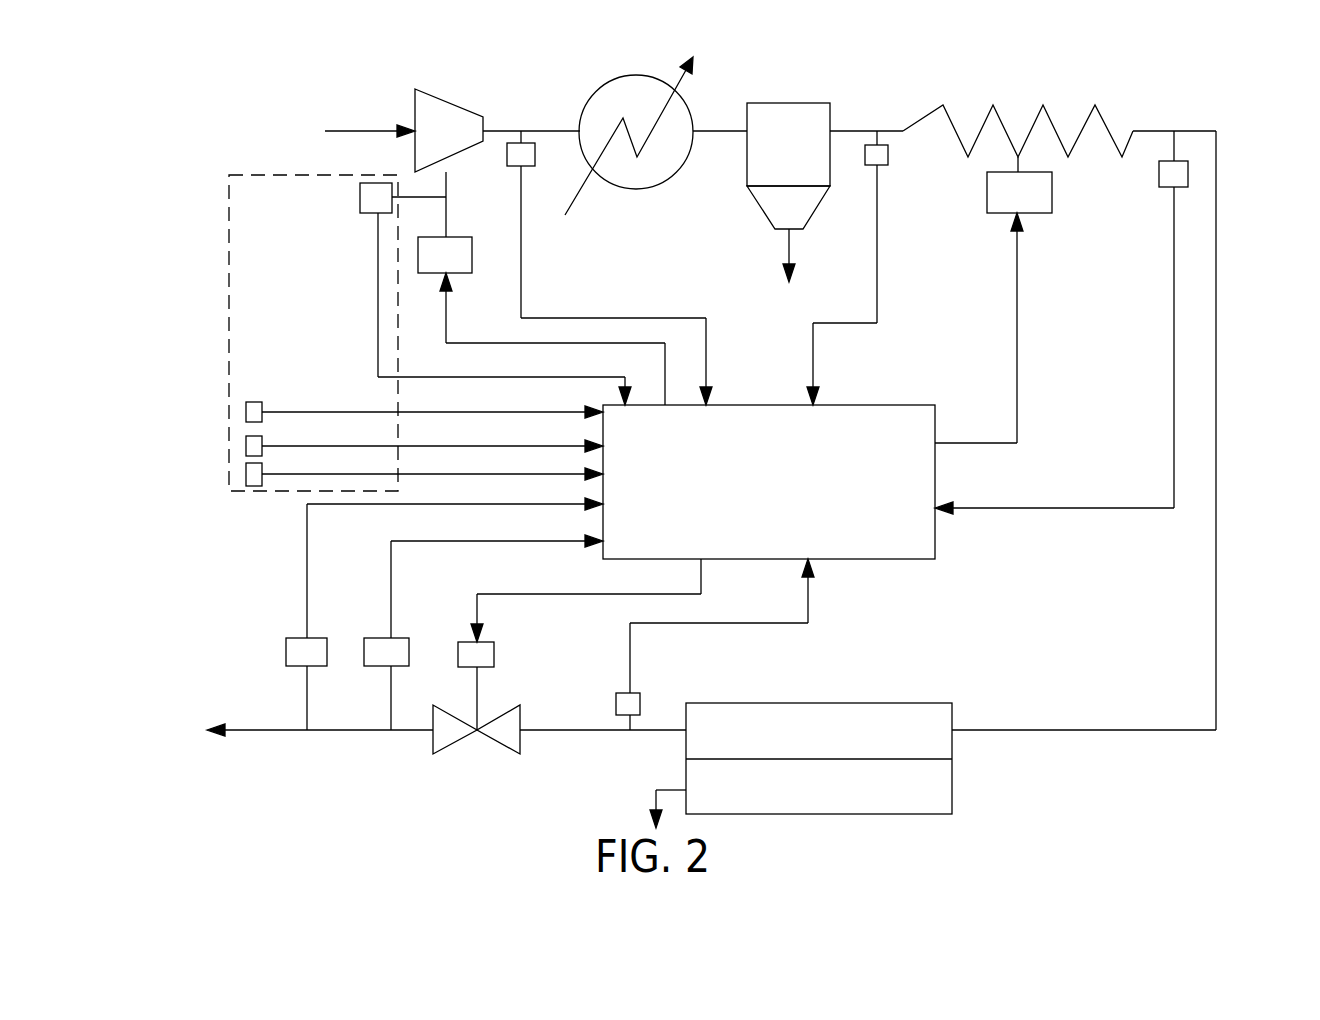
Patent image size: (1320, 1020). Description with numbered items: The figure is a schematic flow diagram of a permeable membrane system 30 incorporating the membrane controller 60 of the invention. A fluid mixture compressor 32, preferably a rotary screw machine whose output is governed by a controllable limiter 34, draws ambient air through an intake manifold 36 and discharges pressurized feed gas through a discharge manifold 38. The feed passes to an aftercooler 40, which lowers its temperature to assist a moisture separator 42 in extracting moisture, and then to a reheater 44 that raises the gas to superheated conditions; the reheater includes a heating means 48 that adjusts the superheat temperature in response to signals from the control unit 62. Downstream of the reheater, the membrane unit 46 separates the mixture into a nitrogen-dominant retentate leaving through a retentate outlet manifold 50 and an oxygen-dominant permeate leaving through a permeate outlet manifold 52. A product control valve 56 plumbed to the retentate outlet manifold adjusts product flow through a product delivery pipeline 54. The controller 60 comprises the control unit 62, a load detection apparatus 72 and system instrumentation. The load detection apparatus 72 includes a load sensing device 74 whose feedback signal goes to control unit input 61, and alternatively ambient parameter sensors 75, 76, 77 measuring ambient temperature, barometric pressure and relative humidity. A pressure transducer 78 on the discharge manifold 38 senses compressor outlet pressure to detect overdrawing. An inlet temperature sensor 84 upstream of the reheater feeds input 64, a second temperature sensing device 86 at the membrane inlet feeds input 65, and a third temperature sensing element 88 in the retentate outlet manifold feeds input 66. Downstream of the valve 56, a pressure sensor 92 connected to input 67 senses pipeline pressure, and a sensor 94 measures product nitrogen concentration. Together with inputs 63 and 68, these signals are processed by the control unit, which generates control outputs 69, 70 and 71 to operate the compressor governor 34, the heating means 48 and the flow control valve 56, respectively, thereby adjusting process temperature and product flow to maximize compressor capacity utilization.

The permeable membrane system 30 is at (1262, 212).
The fluid mixture compressor 32 is at (465, 108).
The controllable limiter 34 is at (541, 290).
The intake manifold 36 is at (380, 128).
The discharge manifold 38 is at (508, 130).
The aftercooler 40 is at (606, 92).
The moisture separator 42 is at (770, 103).
The reheater 44 is at (993, 106).
The membrane unit 46 is at (835, 703).
The heating means 48 is at (1019, 185).
The retentate outlet manifold 50 is at (657, 731).
The permeate outlet manifold 52 is at (656, 795).
The product delivery pipeline 54 is at (340, 732).
The product control valve 56 is at (455, 740).
The membrane controller 60 is at (1048, 580).
The control unit input 61 is at (630, 408).
The control unit 62 is at (769, 482).
The control unit input 63 is at (705, 410).
The control unit input 64 is at (813, 410).
The control unit input 65 is at (935, 512).
The control unit input 66 is at (809, 560).
The control unit input 67 is at (603, 541).
The control unit input 68 is at (603, 505).
The control output 69 is at (667, 403).
The control output 70 is at (935, 440).
The control output 71 is at (703, 562).
The load detection apparatus 72 is at (229, 253).
The load sensing device 74 is at (360, 200).
The ambient parameter sensor 75 is at (246, 419).
The ambient parameter sensor 76 is at (246, 453).
The ambient parameter sensor 77 is at (246, 482).
The pressure transducer 78 is at (521, 167).
The inlet temperature sensor 84 is at (880, 167).
The second temperature sensing device 86 is at (1173, 188).
The third temperature sensing element 88 is at (641, 703).
The pressure sensor 92 is at (391, 638).
The sensor 94 is at (306, 637).